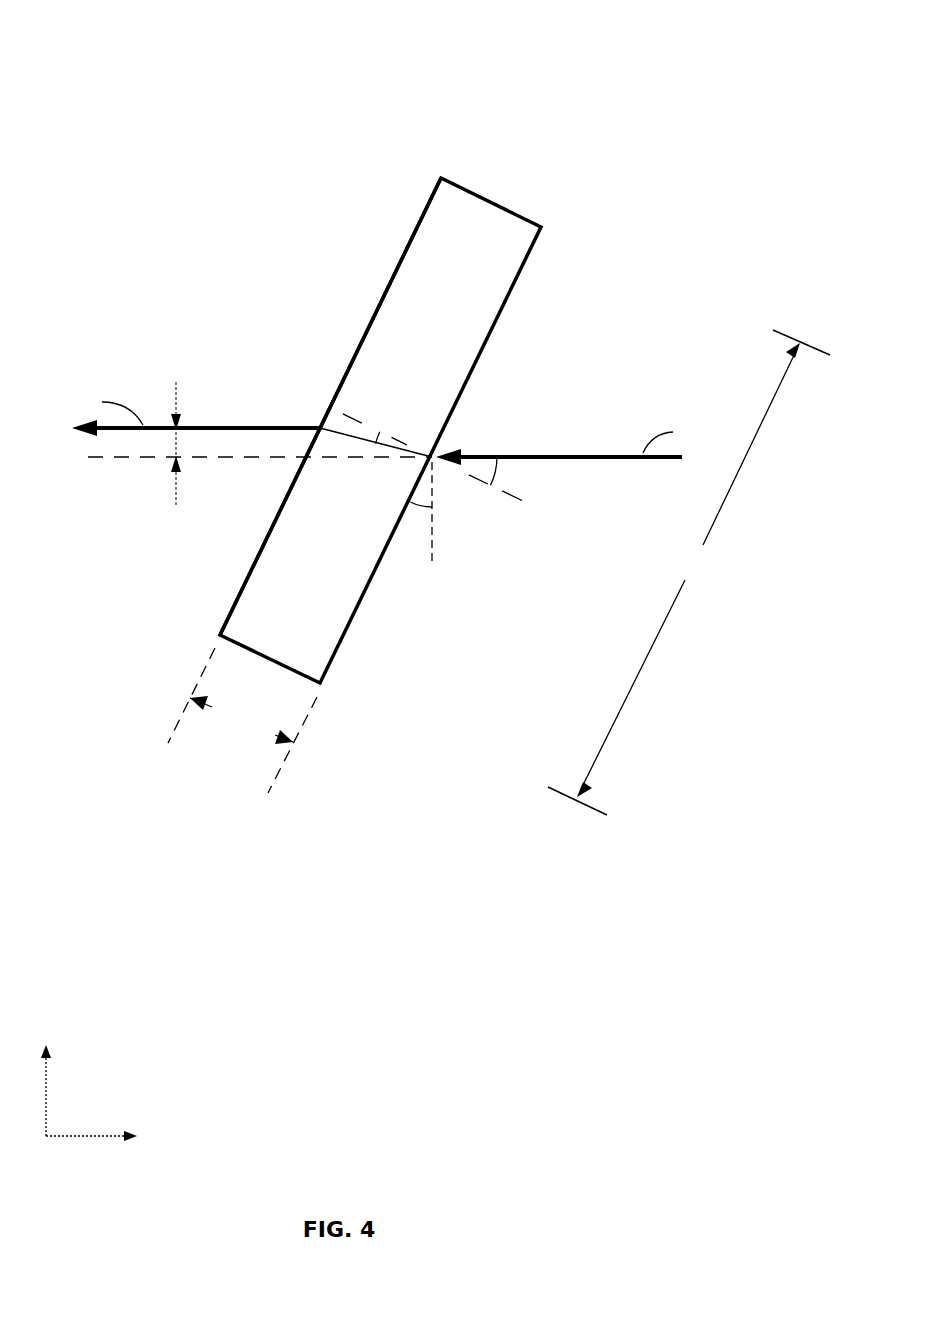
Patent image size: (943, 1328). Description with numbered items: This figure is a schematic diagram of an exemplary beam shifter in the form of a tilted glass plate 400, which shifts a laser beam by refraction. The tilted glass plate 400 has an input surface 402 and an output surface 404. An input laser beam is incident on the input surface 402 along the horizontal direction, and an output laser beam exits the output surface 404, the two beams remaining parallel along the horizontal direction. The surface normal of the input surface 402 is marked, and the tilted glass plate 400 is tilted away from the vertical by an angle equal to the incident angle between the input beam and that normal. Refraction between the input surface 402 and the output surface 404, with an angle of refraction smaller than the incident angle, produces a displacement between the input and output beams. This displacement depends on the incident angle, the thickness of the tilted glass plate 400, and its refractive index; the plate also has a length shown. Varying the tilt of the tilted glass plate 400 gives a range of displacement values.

The tilted glass plate 400 is at (351, 35).
The input surface 402 is at (518, 273).
The output surface 404 is at (397, 270).